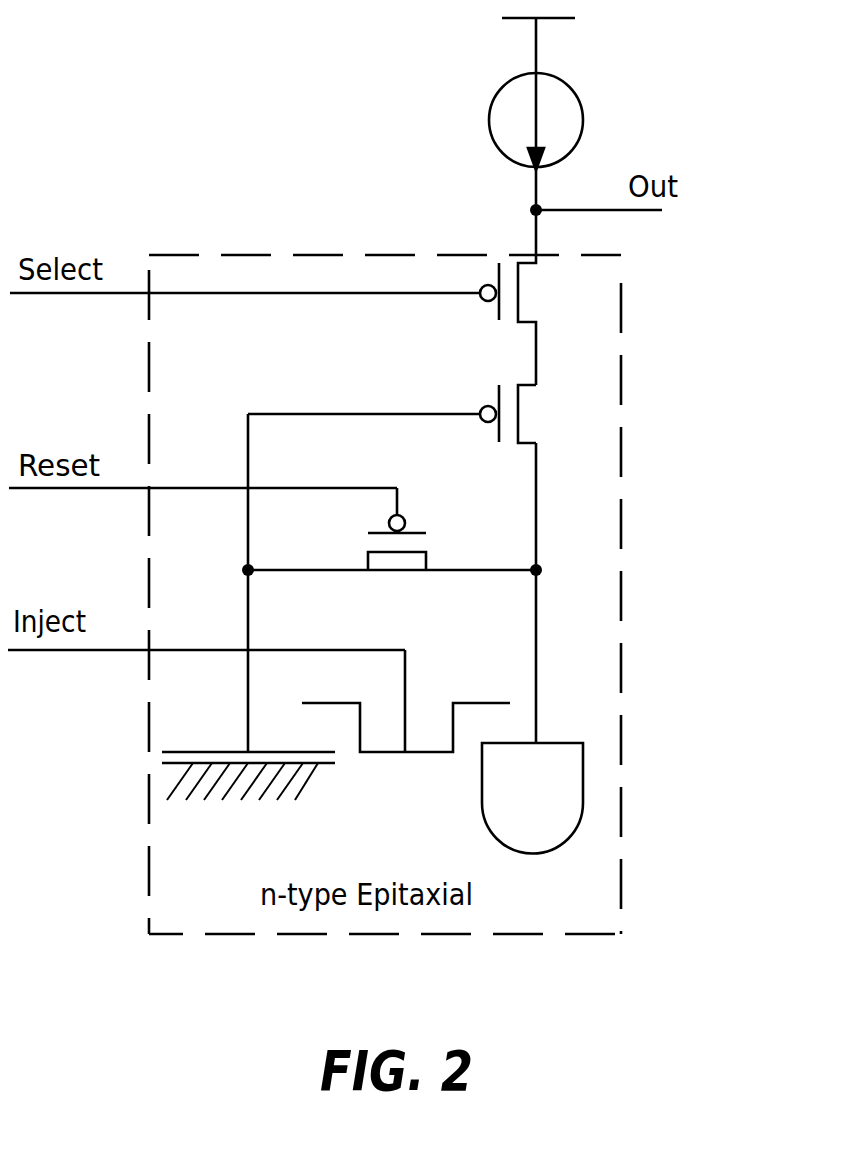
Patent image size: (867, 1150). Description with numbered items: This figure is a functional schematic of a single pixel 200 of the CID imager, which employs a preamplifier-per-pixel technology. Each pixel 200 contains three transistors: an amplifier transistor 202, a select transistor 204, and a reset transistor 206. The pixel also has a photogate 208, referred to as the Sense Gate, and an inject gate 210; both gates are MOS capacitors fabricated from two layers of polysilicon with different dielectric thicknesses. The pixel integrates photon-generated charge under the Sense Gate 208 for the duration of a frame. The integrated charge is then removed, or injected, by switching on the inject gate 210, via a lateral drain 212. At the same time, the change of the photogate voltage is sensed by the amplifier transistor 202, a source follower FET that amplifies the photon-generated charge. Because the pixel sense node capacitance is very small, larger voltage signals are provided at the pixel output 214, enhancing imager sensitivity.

The pixel 200 is at (745, 16).
The amplifier transistor 202 is at (532, 415).
The select transistor 204 is at (530, 293).
The reset transistor 206 is at (399, 567).
The photogate 208 is at (215, 752).
The inject gate 210 is at (425, 740).
The lateral drain 212 is at (583, 777).
The pixel output 214 is at (615, 213).